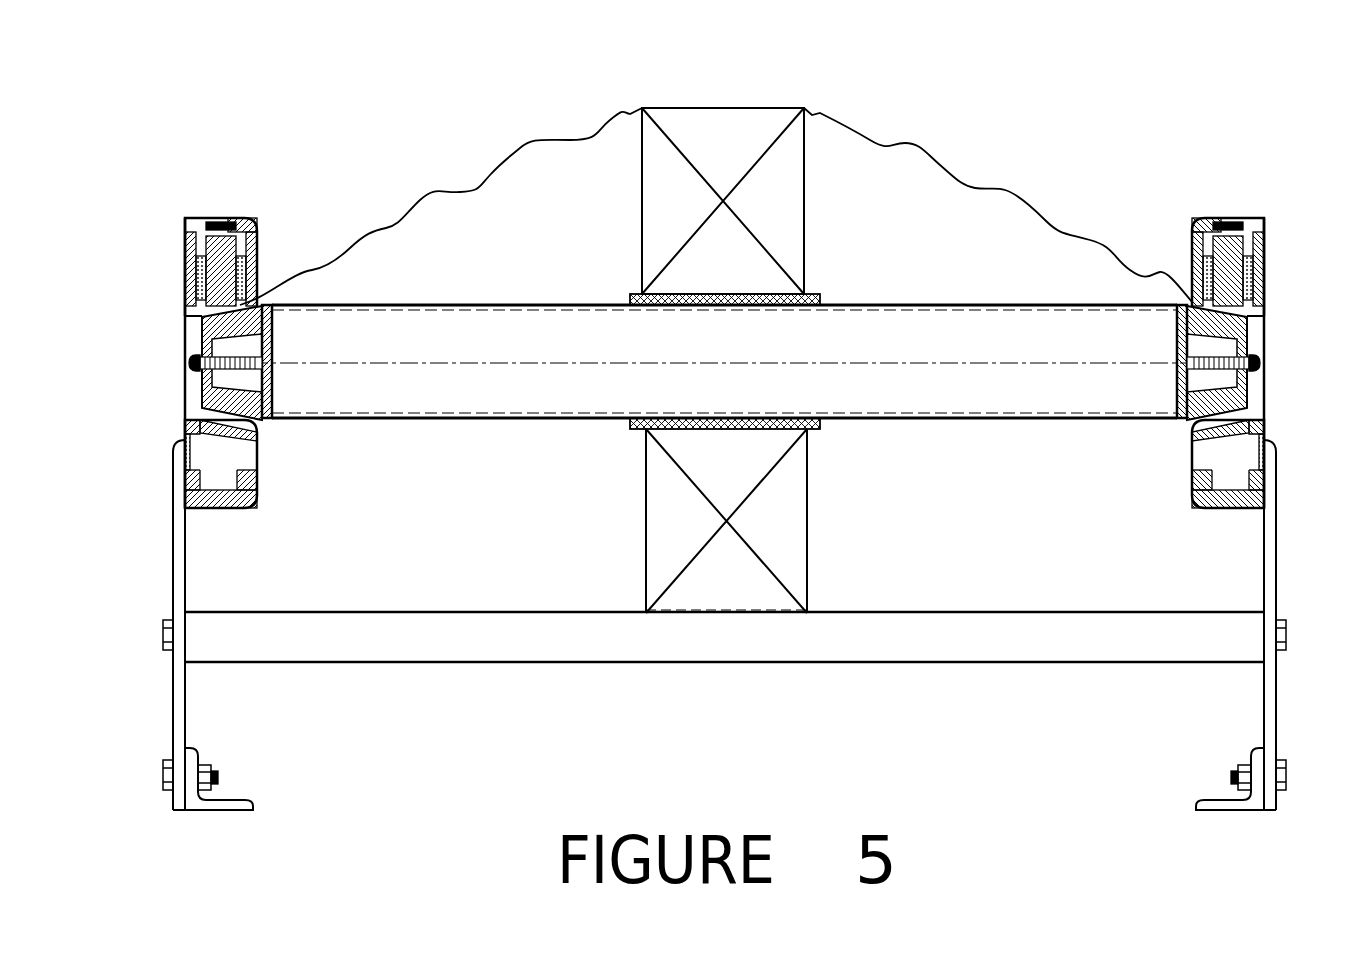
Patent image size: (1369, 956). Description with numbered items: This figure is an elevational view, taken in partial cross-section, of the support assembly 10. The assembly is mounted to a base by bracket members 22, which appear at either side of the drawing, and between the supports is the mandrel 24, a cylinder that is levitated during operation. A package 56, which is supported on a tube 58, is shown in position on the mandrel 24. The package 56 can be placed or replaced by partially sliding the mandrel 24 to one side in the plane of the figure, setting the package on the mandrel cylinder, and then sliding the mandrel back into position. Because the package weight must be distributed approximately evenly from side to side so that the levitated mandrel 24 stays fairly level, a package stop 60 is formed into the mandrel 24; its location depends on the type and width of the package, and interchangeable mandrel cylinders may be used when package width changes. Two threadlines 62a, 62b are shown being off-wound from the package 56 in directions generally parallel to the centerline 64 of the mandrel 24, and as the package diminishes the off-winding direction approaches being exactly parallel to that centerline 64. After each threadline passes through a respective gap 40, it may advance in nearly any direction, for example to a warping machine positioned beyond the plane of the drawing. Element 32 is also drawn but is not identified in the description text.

The support assembly 10 is at (1115, 92).
The bracket members 22 is at (182, 717).
The mandrel 24 is at (392, 420).
The bearing housing 32 is at (222, 421).
The gaps 40 is at (235, 312).
The package 56 is at (793, 540).
The tube 58 is at (816, 293).
The package stop 60 is at (625, 420).
The threadline 62a is at (1033, 198).
The threadline 62b is at (512, 162).
The centerline 64 is at (357, 365).